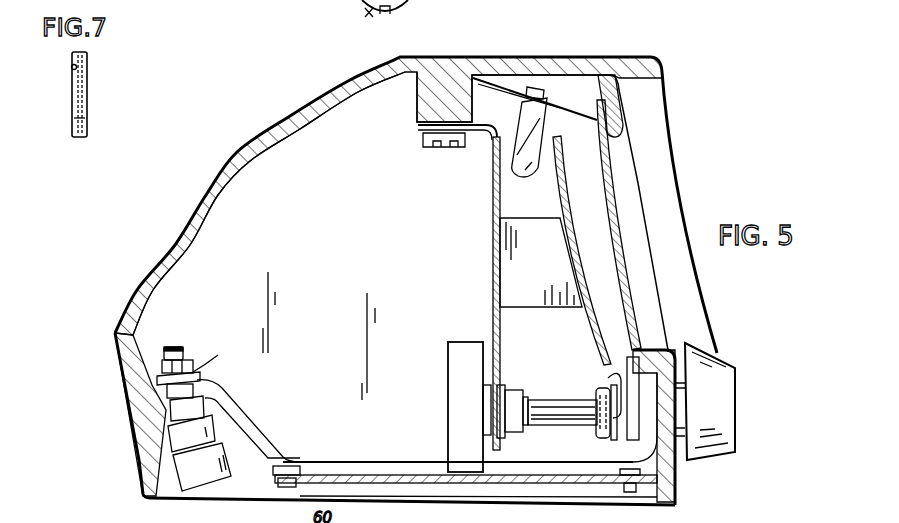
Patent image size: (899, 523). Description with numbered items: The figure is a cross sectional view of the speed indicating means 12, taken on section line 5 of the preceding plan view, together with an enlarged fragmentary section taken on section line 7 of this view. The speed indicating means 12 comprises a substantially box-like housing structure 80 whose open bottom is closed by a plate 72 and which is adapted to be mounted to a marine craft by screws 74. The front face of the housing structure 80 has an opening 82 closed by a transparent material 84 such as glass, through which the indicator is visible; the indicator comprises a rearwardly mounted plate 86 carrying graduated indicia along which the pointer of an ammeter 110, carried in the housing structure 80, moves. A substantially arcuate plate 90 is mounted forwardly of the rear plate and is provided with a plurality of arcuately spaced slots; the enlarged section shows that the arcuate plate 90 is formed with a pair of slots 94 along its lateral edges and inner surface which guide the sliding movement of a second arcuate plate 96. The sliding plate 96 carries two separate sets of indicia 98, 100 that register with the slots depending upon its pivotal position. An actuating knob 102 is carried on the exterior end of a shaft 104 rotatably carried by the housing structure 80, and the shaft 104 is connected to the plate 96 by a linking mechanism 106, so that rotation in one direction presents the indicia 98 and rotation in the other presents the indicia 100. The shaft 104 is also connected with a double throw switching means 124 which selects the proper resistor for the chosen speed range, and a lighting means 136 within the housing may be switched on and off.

In FIG. 5, the section line 5— 5 is at (432, 13).
In FIG. 5, the section line 7— 7 is at (586, 368).
In FIG. 5, the speed indicating means 12 is at (284, 108).
In FIG. 5, the plate 72 is at (393, 481).
In FIG. 5, the screws 74 is at (374, 14).
In FIG. 5, the housing structure 80 is at (242, 162).
In FIG. 5, the opening 82 is at (622, 136).
In FIG. 5, the transparent material 84 is at (612, 180).
In FIG. 5, the rearwardly mounted plate 86 is at (566, 165).
In FIG. 7, the arcuate plate 90 is at (87, 100).
In FIG. 5, the arcuate plate 90 is at (628, 324).
In FIG. 7, the slots 94 is at (72, 66).
In FIG. 7, the arcuate plate 96 is at (77, 118).
In FIG. 5, the arcuate plate 96 is at (600, 331).
In FIG. 5, the indicia 98 is at (168, 497).
In FIG. 5, the indicia 100 is at (236, 517).
In FIG. 5, the actuating knob 102 is at (722, 405).
In FIG. 5, the shaft 104 is at (550, 423).
In FIG. 5, the linking mechanism 106 is at (608, 376).
In FIG. 5, the ammeter 110 is at (510, 258).
In FIG. 5, the double throw switching means 124 is at (516, 390).
In FIG. 5, the lighting means 136 is at (548, 121).